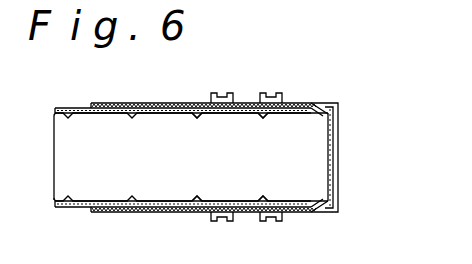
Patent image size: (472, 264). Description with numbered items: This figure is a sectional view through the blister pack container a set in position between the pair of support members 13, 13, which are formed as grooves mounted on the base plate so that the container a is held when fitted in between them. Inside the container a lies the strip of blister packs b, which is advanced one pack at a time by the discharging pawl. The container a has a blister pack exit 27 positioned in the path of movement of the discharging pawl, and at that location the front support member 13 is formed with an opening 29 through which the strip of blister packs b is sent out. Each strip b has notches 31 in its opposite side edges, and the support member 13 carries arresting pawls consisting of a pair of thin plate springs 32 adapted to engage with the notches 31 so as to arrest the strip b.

The support member 13 is at (167, 107).
The blister pack exit 27 is at (332, 155).
The opening 29 is at (333, 133).
The notches 31 is at (196, 114).
The thin plate springs 32 is at (322, 116).
The blister pack container a is at (82, 208).
The strip of blister packs b is at (106, 128).